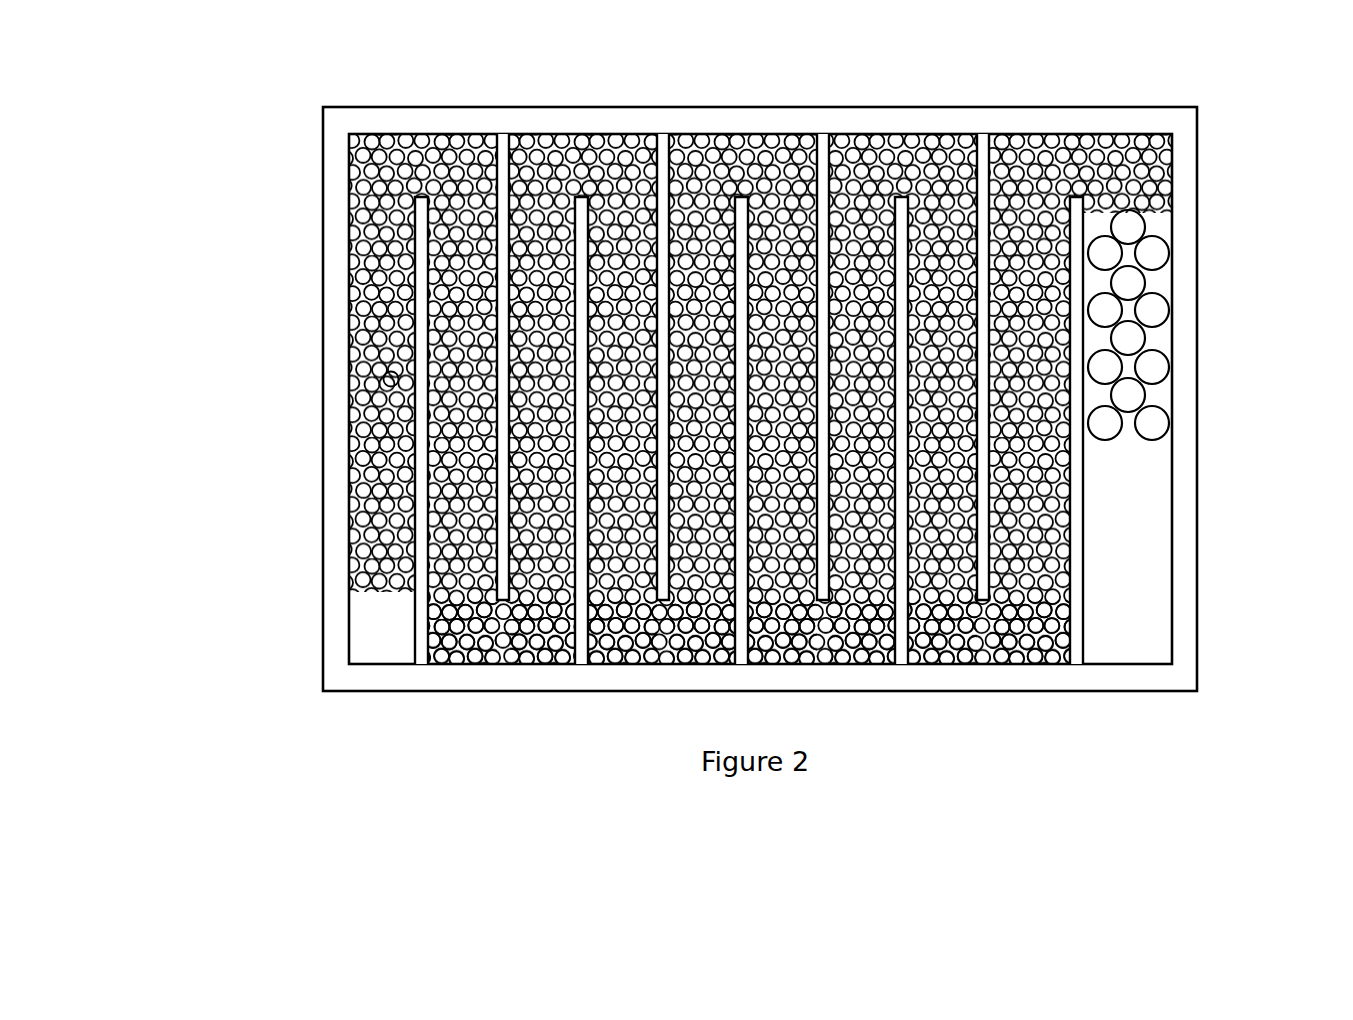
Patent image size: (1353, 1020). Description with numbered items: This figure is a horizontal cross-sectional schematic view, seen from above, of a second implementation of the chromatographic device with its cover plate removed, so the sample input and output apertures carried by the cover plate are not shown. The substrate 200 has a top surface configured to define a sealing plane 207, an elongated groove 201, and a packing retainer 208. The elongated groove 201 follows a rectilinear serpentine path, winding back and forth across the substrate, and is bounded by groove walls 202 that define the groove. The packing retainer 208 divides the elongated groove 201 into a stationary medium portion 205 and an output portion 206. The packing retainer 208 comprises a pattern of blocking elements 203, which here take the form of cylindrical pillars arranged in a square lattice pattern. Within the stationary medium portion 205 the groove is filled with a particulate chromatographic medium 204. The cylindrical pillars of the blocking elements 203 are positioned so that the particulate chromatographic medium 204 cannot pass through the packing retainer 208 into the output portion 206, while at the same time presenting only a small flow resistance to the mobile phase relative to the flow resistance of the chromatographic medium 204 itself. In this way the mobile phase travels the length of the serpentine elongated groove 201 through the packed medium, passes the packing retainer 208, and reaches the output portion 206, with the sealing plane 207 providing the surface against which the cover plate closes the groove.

The substrate 200 is at (322, 280).
The elongated groove 201 is at (355, 542).
The groove walls 202 is at (1072, 208).
The blocking elements 203 is at (1160, 408).
The particulate chromatographic medium 204 is at (383, 380).
The stationary medium portion 205 is at (377, 633).
The output portion 206 is at (1123, 553).
The sealing plane 207 is at (338, 173).
The packing retainer 208 is at (1225, 242).